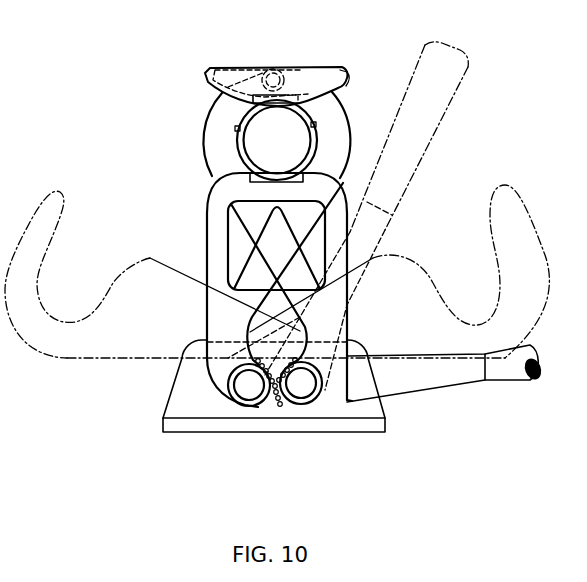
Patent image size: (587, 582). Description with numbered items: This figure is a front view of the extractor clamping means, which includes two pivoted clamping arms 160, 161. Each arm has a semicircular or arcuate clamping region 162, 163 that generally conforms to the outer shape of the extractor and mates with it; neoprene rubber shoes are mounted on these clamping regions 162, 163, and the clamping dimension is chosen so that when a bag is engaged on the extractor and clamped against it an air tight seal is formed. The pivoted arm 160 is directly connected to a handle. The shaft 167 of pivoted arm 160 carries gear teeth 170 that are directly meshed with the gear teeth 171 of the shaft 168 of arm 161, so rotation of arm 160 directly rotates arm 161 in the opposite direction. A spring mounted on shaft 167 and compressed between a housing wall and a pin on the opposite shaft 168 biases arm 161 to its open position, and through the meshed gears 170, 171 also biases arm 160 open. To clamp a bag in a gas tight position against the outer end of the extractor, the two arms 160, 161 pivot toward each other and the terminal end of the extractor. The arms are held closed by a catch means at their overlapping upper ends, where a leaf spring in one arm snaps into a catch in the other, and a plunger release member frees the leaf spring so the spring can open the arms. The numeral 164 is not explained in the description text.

The pivoted clamping arm 160 is at (203, 74).
The pivoted clamping arm 161 is at (340, 70).
The clamping region 162 is at (236, 128).
The clamping region 163 is at (315, 125).
The collar 164 is at (240, 148).
The shaft 167 is at (303, 388).
The shaft 168 is at (250, 392).
The gear teeth 170 is at (283, 404).
The gear teeth 171 is at (268, 402).